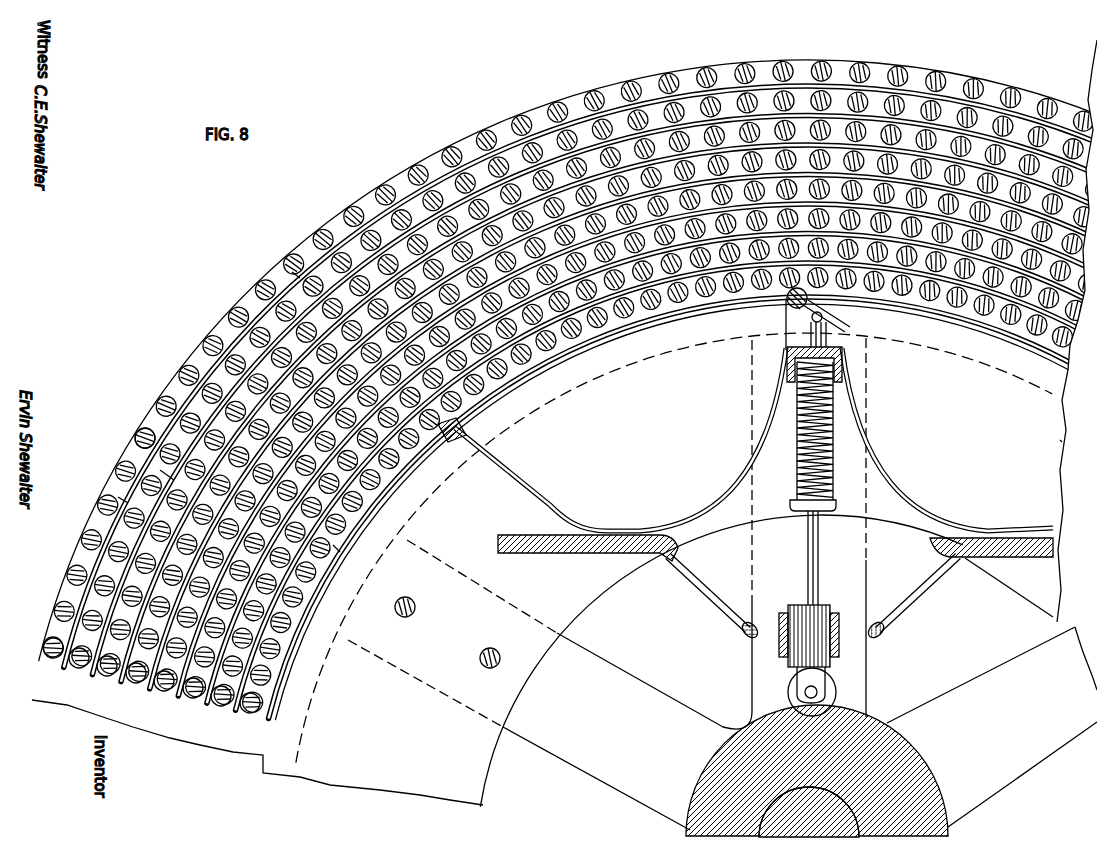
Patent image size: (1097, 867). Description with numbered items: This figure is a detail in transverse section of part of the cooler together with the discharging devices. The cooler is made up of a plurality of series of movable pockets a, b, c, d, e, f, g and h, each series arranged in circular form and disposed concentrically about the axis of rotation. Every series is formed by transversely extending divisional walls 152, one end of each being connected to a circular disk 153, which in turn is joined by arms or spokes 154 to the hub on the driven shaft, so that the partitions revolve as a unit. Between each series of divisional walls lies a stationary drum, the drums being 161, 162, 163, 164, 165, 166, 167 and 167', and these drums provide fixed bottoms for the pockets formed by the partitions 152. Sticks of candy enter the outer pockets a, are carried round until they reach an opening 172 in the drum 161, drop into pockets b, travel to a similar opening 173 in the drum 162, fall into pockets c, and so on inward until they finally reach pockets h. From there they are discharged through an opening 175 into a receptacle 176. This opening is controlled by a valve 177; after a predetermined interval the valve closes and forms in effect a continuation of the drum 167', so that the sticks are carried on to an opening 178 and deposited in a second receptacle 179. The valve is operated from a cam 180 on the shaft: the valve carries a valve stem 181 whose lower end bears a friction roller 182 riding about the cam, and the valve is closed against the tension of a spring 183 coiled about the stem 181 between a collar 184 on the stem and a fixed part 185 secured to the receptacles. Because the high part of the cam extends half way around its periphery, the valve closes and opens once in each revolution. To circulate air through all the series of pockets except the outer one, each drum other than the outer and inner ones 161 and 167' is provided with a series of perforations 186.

The divisional walls 152 is at (135, 437).
The circular disk 153 is at (53, 620).
The arms or spokes 154 is at (603, 683).
The drum 161 is at (65, 678).
The drum 162 is at (93, 687).
The drum 163 is at (123, 695).
The drum 164 is at (152, 698).
The drum 165 is at (180, 703).
The drum 166 is at (210, 708).
The drum 167 is at (659, 522).
The inner drum 167' is at (661, 545).
The opening 172 is at (123, 500).
The opening 173 is at (167, 475).
The opening 175 is at (837, 302).
The receptacle 176 is at (1030, 447).
The valve 177 is at (846, 322).
The opening 178 is at (770, 302).
The second receptacle 179 is at (535, 458).
The cam 180 is at (865, 740).
The valve stem 181 is at (810, 551).
The friction roller 182 is at (787, 690).
The spring 183 is at (797, 437).
The collar 184 is at (798, 505).
The fixed part 185 is at (787, 365).
The perforations 186 is at (336, 548).
The series of pockets a is at (51, 664).
The series of pockets b is at (79, 672).
The series of pockets c is at (107, 680).
The series of pockets d is at (136, 685).
The series of pockets e is at (164, 692).
The series of pockets f is at (193, 699).
The series of pockets g is at (221, 706).
The series of pockets h is at (250, 711).